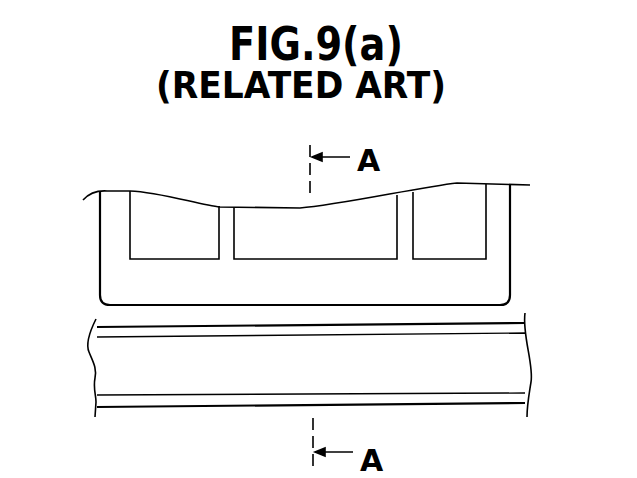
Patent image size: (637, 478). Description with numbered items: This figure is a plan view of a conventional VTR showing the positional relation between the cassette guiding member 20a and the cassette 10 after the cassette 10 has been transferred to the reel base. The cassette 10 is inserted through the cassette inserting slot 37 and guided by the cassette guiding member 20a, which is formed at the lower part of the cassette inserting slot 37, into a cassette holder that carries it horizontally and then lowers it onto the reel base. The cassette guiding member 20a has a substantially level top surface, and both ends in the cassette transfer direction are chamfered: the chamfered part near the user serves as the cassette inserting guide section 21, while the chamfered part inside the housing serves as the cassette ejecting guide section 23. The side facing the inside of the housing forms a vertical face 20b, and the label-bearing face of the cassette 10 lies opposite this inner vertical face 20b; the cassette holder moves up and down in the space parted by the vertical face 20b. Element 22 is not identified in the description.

The cassette 10 is at (96, 275).
The cassette guiding member 20a is at (86, 381).
The vertical face 20b is at (498, 323).
The cassette inserting guide section 21 is at (473, 395).
The intermediate layer of recording sheet 22 is at (165, 375).
The cassette ejecting guide section 23 is at (235, 331).
The cassette inserting slot 37 is at (385, 420).